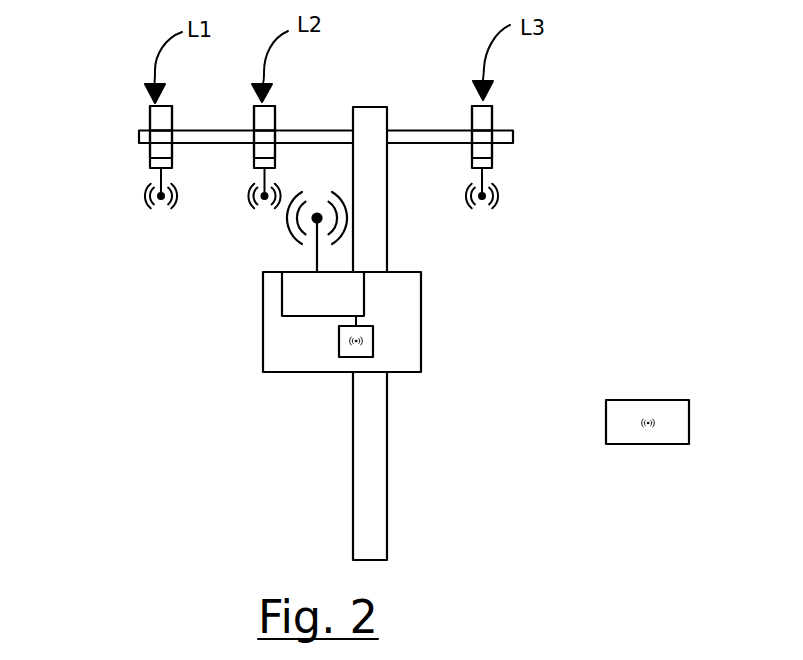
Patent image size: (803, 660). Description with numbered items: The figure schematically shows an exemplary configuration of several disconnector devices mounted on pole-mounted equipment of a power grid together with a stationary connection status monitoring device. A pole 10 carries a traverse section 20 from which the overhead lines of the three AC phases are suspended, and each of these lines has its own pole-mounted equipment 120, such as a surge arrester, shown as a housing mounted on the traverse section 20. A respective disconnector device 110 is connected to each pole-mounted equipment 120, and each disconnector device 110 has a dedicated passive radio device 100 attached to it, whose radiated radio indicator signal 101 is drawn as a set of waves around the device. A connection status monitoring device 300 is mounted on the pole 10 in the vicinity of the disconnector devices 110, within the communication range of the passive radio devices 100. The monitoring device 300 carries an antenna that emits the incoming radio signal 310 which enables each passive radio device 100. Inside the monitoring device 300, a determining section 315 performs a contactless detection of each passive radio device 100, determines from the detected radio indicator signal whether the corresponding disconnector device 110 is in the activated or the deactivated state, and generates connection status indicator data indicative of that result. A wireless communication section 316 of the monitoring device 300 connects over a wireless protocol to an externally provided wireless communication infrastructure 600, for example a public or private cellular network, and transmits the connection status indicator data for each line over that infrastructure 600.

The pole 10 is at (386, 487).
The traverse section 20 is at (318, 133).
The passive radio device 100 is at (150, 165).
The wireless sensor signal 101 is at (148, 208).
The disconnector device 110 is at (150, 152).
The pole-mounted equipment 120 is at (563, 111).
The connection status monitoring device 300 is at (421, 332).
The incoming radio signal 310 is at (290, 231).
The determining section 315 is at (373, 357).
The wireless communication section 316 is at (282, 300).
The wireless communication infrastructure 600 is at (607, 420).